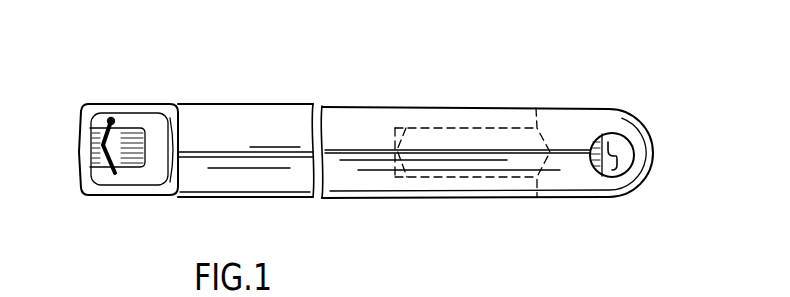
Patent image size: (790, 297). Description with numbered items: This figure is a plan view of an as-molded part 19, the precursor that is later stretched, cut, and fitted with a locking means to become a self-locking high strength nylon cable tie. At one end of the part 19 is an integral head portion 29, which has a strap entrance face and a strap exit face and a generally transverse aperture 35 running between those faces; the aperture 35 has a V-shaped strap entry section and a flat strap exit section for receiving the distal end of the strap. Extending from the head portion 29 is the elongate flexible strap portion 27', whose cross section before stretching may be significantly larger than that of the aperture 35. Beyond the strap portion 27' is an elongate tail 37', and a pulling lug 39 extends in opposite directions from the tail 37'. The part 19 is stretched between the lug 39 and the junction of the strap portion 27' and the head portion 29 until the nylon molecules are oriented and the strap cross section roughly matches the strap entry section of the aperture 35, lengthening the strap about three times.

The as-molded part 19 is at (371, 87).
The head portion 29 is at (130, 192).
The aperture 35 is at (114, 118).
The strap portion 27' is at (462, 230).
The tail 37' is at (494, 190).
The pulling lug 39 is at (612, 134).